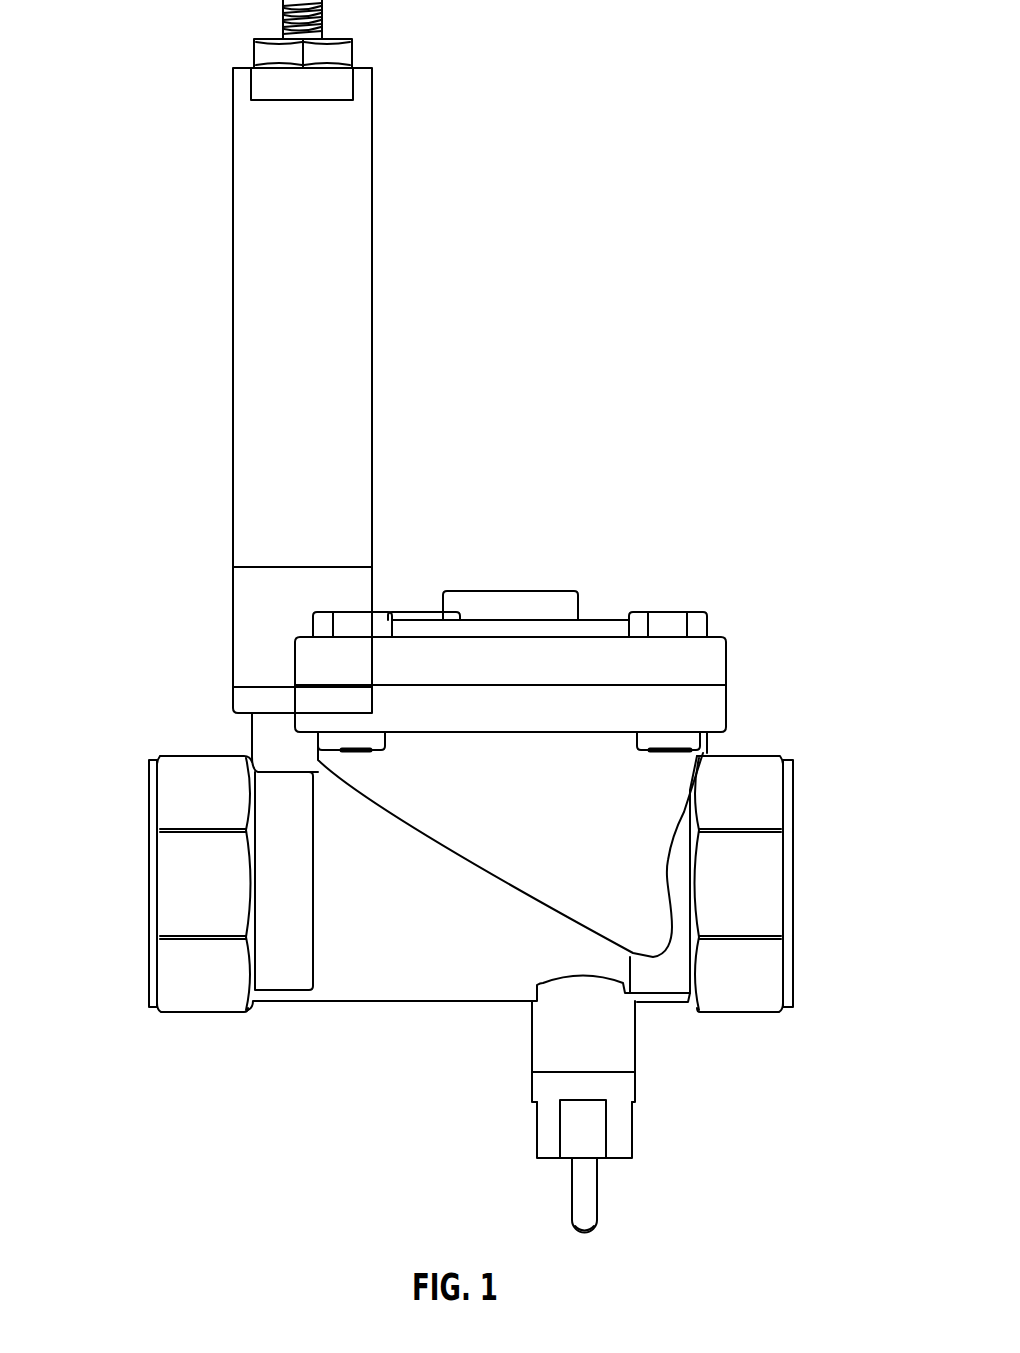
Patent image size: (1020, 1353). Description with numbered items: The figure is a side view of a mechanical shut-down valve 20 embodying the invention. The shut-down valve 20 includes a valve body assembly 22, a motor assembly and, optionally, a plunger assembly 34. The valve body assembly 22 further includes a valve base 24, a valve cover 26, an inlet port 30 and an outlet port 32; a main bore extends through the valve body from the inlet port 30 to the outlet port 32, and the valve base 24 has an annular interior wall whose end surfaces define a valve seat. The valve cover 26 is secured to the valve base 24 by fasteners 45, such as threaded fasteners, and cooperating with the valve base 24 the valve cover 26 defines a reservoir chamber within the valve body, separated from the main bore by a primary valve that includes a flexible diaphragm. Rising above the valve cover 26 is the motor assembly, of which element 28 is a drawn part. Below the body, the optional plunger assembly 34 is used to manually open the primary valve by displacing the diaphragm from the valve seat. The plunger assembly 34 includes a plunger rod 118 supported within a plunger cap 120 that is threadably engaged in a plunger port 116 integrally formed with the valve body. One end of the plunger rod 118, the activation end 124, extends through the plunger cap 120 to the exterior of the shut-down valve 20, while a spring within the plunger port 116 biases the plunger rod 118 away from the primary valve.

The shut-down valve 20 is at (718, 158).
The valve body assembly 22 is at (270, 1012).
The valve base 24 is at (417, 995).
The valve cover 26 is at (703, 666).
The solenoid actuator 28 is at (268, 180).
The inlet port 30 is at (812, 878).
The outlet port 32 is at (138, 872).
The plunger assembly 34 is at (503, 1133).
The fasteners 45 is at (358, 622).
The plunger port 116 is at (633, 1040).
The plunger rod 118 is at (587, 1198).
The plunger cap 120 is at (620, 1123).
The activation end 124 is at (588, 1230).